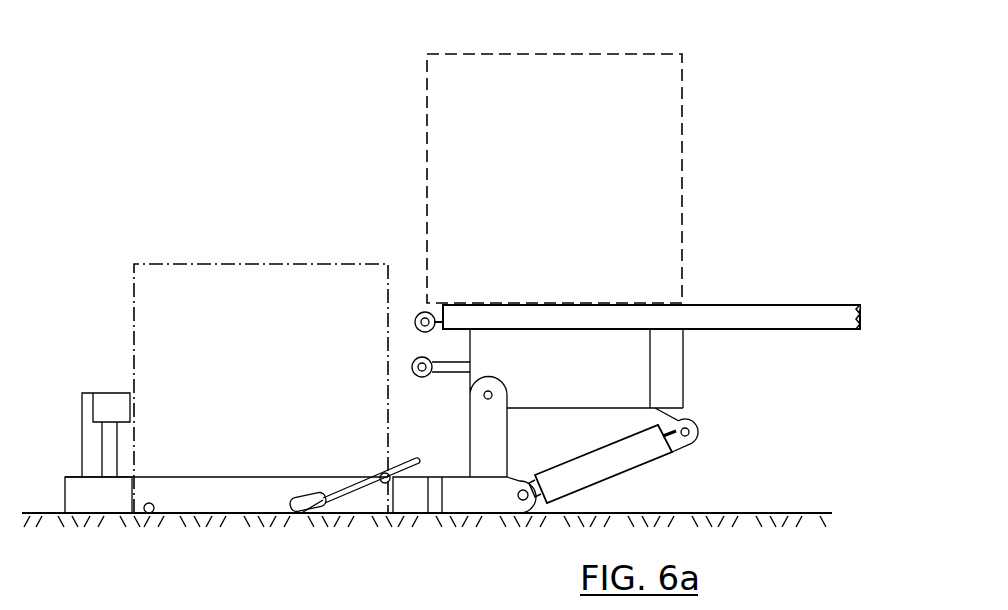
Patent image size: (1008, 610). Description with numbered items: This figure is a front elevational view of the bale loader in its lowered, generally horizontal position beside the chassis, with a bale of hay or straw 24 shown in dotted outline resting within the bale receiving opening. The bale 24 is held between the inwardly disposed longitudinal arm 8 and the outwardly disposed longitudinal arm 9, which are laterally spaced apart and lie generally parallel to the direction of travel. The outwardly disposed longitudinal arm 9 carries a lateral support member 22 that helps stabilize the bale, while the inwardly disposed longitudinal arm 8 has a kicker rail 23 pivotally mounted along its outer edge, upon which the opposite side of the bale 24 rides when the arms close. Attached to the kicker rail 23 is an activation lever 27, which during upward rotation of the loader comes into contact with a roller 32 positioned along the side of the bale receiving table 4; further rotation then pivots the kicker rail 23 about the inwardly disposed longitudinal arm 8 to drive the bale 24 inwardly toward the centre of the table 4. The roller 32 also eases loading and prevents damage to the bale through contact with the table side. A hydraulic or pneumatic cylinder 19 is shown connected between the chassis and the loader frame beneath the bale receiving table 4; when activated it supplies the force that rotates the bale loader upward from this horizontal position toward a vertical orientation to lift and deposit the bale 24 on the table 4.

The bale receiving table 4 is at (741, 305).
The inwardly disposed longitudinal arm 8 is at (413, 483).
The outwardly disposed longitudinal arm 9 is at (72, 483).
The hydraulic or pneumatic cylinder 19 is at (627, 462).
The lateral support member 22 is at (103, 400).
The kicker rail 23 is at (307, 493).
The bale of hay or straw 24 is at (328, 263).
The activation lever 27 is at (416, 456).
The roller 32 is at (417, 311).